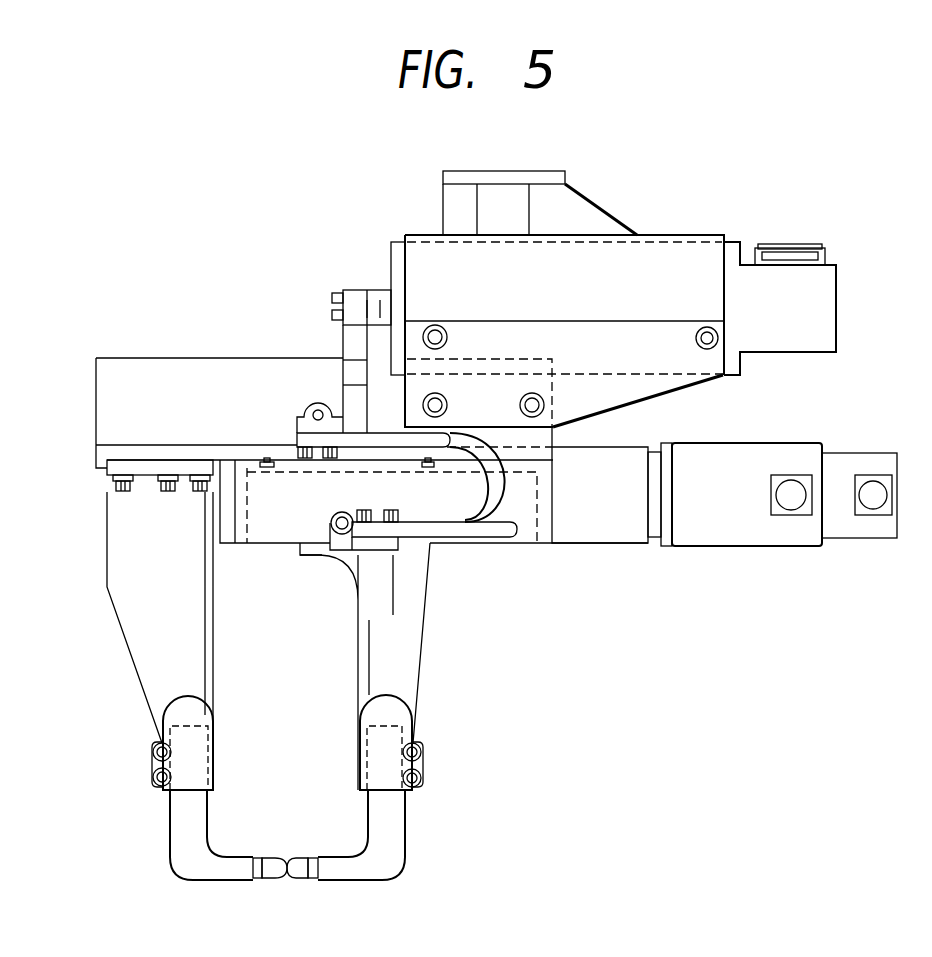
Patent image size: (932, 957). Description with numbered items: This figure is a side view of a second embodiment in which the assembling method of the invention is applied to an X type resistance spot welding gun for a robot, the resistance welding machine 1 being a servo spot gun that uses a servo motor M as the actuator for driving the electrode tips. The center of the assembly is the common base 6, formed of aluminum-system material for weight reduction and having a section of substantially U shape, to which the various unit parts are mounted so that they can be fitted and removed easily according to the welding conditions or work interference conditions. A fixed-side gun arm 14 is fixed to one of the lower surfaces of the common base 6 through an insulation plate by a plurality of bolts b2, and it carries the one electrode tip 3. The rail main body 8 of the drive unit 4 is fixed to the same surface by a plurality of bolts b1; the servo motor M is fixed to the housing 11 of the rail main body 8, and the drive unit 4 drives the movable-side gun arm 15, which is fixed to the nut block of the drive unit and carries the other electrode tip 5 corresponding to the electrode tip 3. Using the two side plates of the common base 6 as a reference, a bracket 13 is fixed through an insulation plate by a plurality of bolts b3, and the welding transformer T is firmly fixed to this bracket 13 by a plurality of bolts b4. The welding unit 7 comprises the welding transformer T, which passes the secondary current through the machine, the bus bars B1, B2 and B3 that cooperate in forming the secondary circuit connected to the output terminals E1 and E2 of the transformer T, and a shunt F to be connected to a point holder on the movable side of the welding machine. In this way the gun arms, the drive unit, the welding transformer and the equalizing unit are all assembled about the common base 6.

The resistance welding machine 1 is at (707, 198).
The electrode tip 3 is at (275, 870).
The drive unit 4 is at (610, 527).
The electrode tip 5 is at (298, 872).
The common base 6 is at (205, 366).
The welding unit 7 is at (157, 167).
The rail main body 8 is at (277, 535).
The housing 11 is at (565, 535).
The bracket 13 is at (582, 213).
The fixed-side gun arm 14 is at (130, 578).
The movable-side gun arm 15 is at (413, 652).
The bolts b1 is at (262, 462).
The bolts b2 is at (168, 492).
The bolts b3 is at (535, 409).
The bolts b4 is at (714, 340).
The bus bar B1 is at (266, 269).
The bus bar B2 is at (357, 373).
The bus bar B3 is at (369, 543).
The output terminal E1 is at (306, 248).
The output terminal E2 is at (382, 312).
The shunt F is at (480, 443).
The welding transformer T is at (433, 248).
The servo motor M is at (722, 538).